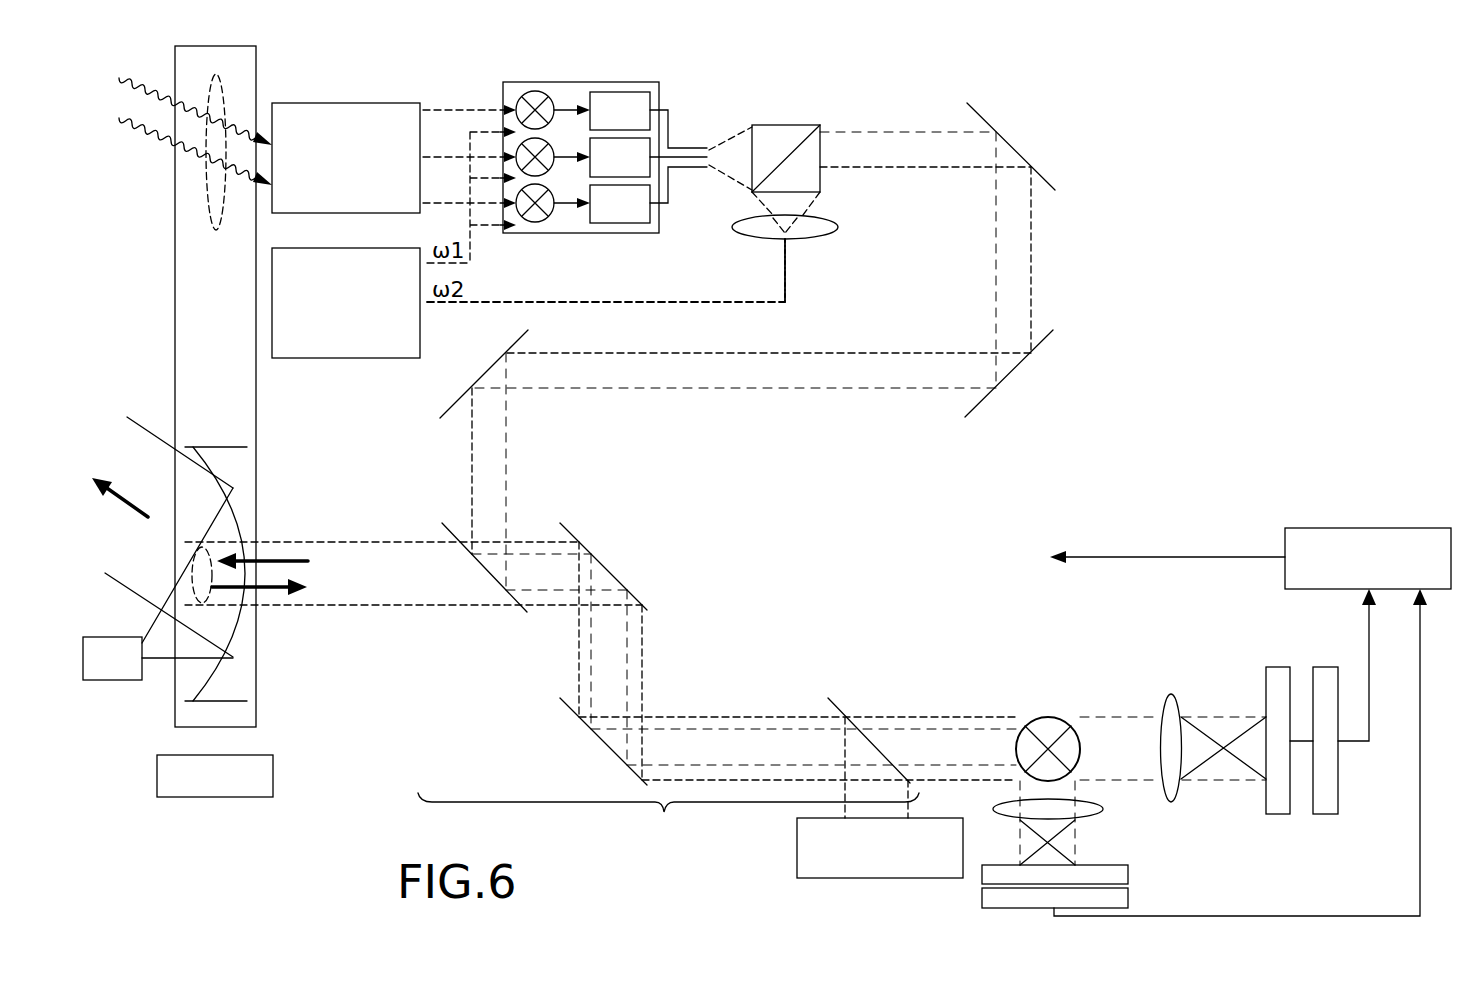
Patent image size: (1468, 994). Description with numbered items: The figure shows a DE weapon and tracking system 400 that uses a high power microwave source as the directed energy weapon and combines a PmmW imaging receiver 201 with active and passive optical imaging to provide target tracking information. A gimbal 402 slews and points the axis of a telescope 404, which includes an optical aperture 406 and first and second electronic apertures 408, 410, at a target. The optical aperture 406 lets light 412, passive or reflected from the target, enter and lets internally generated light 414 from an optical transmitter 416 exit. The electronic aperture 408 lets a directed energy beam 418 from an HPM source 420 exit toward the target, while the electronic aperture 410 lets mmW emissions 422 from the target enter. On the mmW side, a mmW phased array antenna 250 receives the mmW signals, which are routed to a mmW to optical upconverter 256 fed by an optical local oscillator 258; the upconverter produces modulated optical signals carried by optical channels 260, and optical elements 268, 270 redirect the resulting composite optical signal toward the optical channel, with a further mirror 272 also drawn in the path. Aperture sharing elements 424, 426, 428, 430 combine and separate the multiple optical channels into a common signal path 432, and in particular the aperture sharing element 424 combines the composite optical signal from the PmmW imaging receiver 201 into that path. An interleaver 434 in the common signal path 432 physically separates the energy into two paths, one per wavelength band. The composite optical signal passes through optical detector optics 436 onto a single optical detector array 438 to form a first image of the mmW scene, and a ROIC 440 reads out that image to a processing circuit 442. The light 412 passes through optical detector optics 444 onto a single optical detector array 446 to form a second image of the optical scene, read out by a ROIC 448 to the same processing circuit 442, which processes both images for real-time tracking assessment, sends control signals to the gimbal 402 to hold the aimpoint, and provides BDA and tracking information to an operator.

The PmmW imaging receiver 201 is at (815, 273).
The mmW phased array antenna 250 is at (345, 103).
The mmW to optical upconverter 256 is at (630, 82).
The optical local oscillator 258 is at (343, 360).
The optical channels 260 is at (693, 148).
The optical element 268 is at (1008, 145).
The optical element 270 is at (975, 405).
The mirror 272 is at (460, 398).
The DE weapon and tracking system 400 is at (1175, 380).
The gimbal 402 is at (215, 797).
The telescope 404 is at (197, 384).
The optical aperture 406 is at (192, 560).
The first electronic aperture 408 is at (223, 470).
The second electronic aperture 410 is at (214, 232).
The light 412 is at (278, 590).
The internally generated light 414 is at (277, 555).
The optical transmitter 416 is at (797, 847).
The directed energy beam 418 is at (120, 498).
The HPM source 420 is at (127, 682).
The mmW emissions 422 is at (168, 141).
The aperture sharing element 424 is at (490, 573).
The aperture sharing element 426 is at (607, 568).
The aperture sharing element 428 is at (570, 708).
The aperture sharing element 430 is at (838, 710).
The common signal path 432 is at (668, 820).
The interleaver 434 is at (1050, 716).
The optical detector optics 436 is at (1171, 695).
The optical detector array 438 is at (1278, 667).
The ROIC 440 is at (1326, 667).
The processing circuit 442 is at (1357, 527).
The optical detector optics 444 is at (1103, 809).
The optical detector array 446 is at (1128, 875).
The ROIC 448 is at (1128, 898).